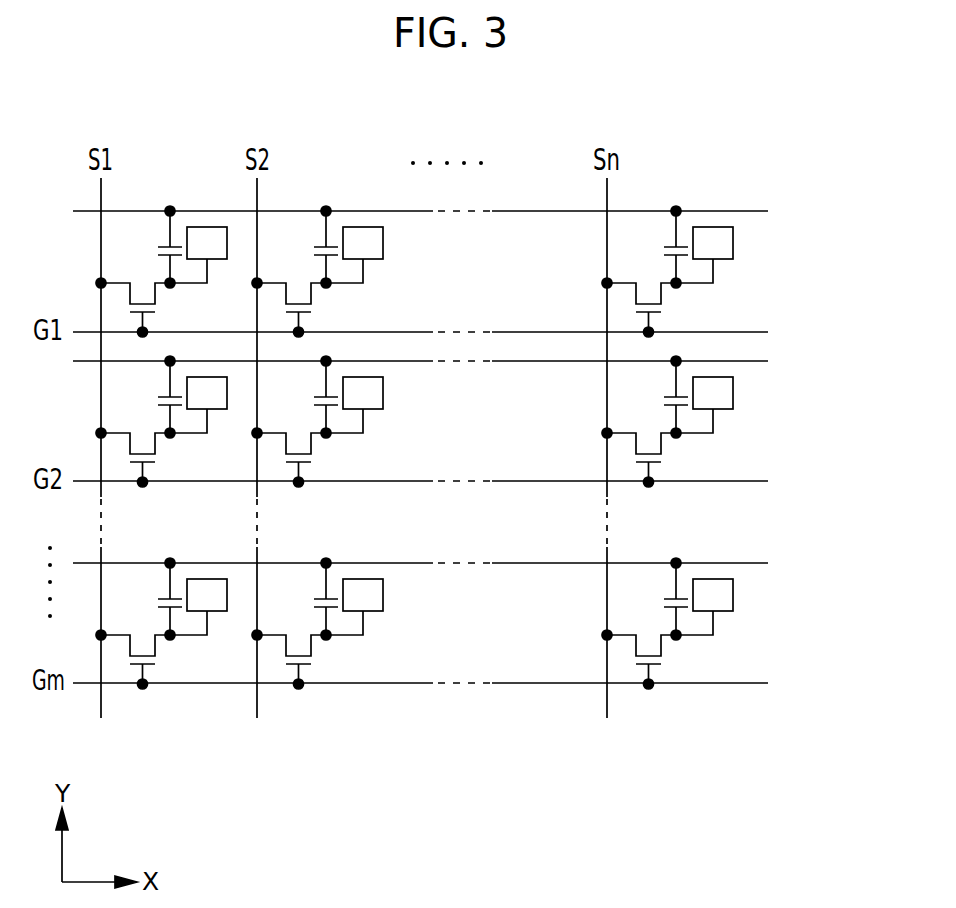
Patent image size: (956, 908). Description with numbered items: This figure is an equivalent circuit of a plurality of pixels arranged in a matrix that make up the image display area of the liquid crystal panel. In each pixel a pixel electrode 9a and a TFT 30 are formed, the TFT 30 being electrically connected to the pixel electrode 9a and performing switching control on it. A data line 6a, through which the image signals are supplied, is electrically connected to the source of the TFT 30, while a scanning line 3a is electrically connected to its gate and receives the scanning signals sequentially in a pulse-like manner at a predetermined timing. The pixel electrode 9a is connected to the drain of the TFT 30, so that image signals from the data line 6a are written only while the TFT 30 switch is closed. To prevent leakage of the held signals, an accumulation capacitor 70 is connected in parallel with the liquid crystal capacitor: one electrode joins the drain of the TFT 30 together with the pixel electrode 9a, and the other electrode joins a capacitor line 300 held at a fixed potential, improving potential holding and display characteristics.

The data line 6a is at (101, 190).
The scanning line 3a is at (757, 333).
The capacitor line 300 is at (752, 214).
The accumulation capacitor 70 is at (158, 255).
The TFT 30 is at (122, 295).
The pixel electrode 9a is at (727, 249).